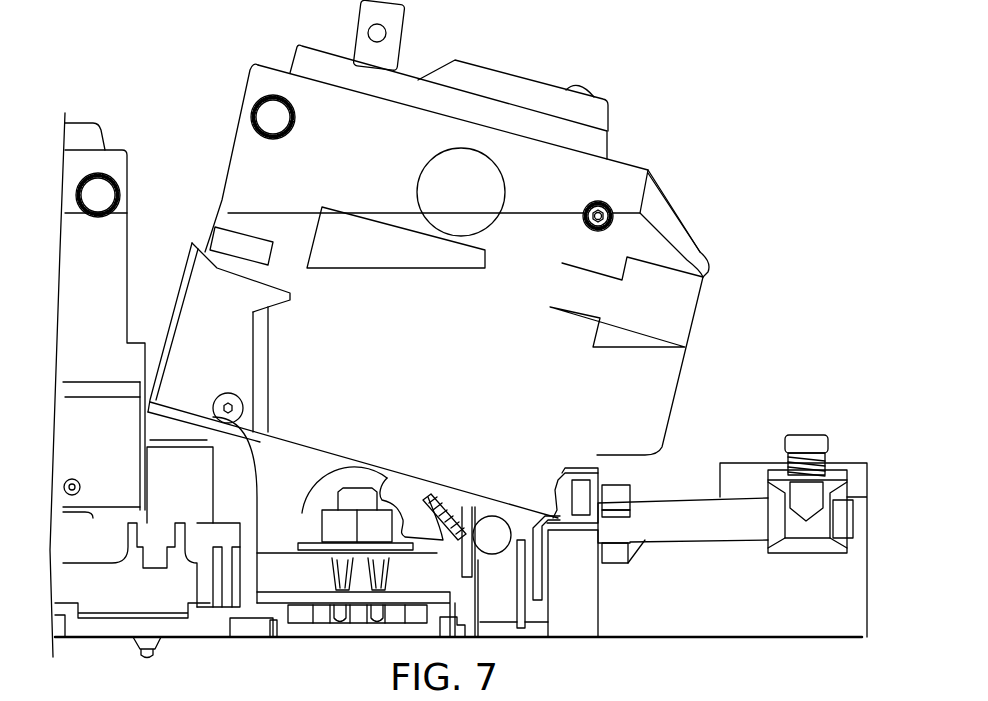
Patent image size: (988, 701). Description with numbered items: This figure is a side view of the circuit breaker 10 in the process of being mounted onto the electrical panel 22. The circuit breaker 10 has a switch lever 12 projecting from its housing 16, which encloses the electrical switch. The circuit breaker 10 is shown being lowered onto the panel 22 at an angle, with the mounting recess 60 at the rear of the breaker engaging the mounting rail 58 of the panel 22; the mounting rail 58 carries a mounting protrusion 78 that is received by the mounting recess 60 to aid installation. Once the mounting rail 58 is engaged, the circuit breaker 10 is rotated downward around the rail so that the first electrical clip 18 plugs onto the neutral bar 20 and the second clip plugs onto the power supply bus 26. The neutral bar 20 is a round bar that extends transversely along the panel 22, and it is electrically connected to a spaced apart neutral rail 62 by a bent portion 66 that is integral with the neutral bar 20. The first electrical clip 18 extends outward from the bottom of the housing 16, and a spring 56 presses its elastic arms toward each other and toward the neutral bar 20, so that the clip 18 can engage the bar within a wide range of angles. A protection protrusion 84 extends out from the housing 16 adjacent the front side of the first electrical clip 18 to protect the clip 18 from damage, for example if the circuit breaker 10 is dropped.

The circuit breaker 10 is at (670, 133).
The switch lever 12 is at (364, 8).
The housing 16 is at (645, 228).
The first electrical clip 18 is at (433, 543).
The neutral bar 20 is at (493, 547).
The electrical panel 22 is at (580, 612).
The power supply bus 26 is at (193, 494).
The spring 56 is at (432, 497).
The mounting rail 58 is at (624, 503).
The mounting recess 60 is at (562, 473).
The neutral rail 62 is at (830, 465).
The bent portion 66 is at (705, 510).
The mounting protrusion 78 is at (580, 477).
The protection protrusion 84 is at (405, 497).